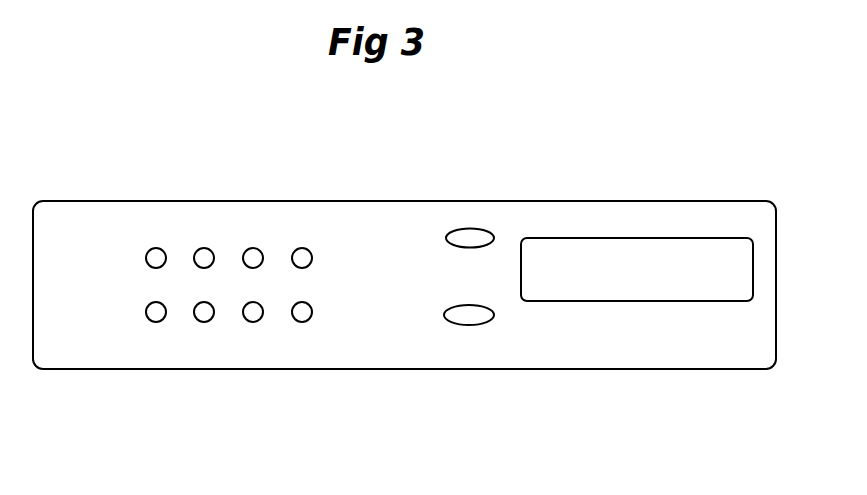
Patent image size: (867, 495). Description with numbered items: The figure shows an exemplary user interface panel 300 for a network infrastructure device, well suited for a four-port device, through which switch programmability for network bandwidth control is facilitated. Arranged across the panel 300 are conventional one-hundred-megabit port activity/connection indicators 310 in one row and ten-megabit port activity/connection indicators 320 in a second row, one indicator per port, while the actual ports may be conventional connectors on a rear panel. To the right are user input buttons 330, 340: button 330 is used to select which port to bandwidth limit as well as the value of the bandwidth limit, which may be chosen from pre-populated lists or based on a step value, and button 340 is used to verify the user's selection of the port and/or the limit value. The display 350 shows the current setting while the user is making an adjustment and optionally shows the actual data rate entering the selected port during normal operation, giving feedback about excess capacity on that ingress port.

The user interface panel 300 is at (404, 266).
The 100 Mbps port activity/connection indicators 310 is at (302, 258).
The 10 Mbps port activity/connection indicators 320 is at (300, 316).
The user input button 330 is at (468, 238).
The user input button 340 is at (469, 317).
The display 350 is at (652, 257).